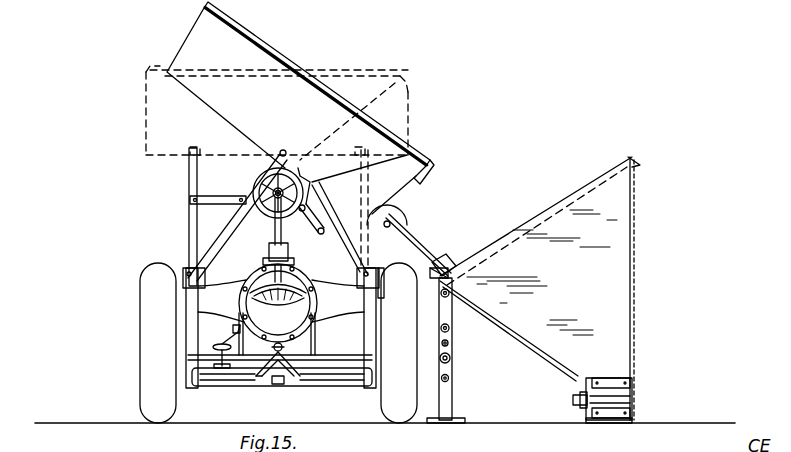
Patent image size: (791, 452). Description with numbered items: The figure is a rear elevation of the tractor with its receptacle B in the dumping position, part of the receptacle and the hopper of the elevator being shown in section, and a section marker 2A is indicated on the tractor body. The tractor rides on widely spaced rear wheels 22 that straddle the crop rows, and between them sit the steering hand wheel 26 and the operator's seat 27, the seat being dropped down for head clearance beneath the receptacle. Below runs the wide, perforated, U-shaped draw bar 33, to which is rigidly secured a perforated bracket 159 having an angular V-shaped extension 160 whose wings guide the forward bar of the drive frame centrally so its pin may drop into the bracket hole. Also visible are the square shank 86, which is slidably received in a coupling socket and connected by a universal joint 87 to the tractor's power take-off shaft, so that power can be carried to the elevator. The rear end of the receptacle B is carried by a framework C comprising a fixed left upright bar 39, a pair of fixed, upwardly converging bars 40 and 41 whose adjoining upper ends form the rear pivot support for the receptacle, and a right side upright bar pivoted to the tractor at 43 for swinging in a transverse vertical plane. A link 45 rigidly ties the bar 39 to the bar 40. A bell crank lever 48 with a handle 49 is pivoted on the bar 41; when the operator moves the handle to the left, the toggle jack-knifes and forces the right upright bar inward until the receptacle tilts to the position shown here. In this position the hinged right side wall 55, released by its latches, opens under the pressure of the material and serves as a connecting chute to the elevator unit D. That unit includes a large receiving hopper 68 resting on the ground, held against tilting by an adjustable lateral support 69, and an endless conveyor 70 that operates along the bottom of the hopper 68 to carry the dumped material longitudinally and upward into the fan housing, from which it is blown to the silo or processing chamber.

The rear wheels 22 is at (160, 326).
The hand wheel 26 is at (256, 189).
The seat 27 is at (250, 297).
The draw bar 33 is at (350, 378).
The left upright bar 39 is at (190, 186).
The upwardly converging bar 40 is at (215, 248).
The upwardly converging bar 41 is at (347, 249).
The pivot 43 is at (368, 272).
The link 45 is at (219, 203).
The bell crank lever 48 is at (304, 224).
The handle 49 is at (275, 229).
The right side wall 55 is at (410, 242).
The receiving hopper 68 is at (614, 283).
The adjustable lateral support 69 is at (450, 394).
The endless conveyor 70 is at (600, 395).
The square shank 86 is at (275, 347).
The universal joint 87 is at (282, 347).
The perforated bracket 159 is at (282, 380).
The V-shaped extension 160 is at (272, 370).
The section line 2A is at (314, 336).
The receptacle B is at (292, 14).
The framework C is at (184, 222).
The elevator unit D is at (558, 170).